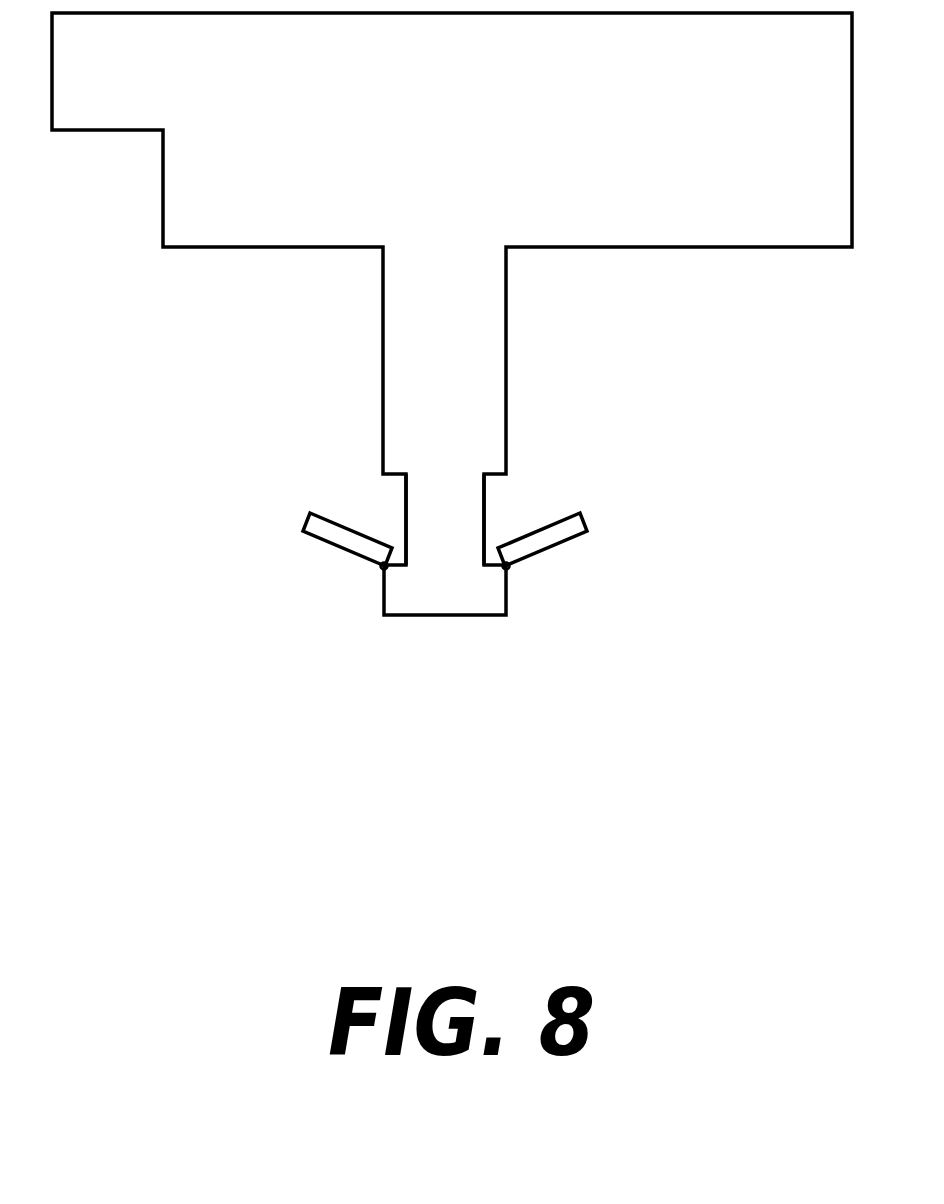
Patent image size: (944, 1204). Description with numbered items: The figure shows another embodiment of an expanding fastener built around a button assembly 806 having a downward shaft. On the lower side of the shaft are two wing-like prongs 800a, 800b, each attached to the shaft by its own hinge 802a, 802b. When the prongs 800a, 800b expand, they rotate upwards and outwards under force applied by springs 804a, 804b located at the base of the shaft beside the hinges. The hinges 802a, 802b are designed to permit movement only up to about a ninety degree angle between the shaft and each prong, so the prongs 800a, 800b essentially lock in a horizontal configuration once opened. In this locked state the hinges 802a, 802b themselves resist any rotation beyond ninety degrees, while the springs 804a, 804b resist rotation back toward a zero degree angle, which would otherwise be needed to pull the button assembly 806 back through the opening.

The button assembly 806 is at (498, 218).
The prong 800a is at (297, 560).
The prong 800b is at (590, 565).
The hinge 802a is at (365, 585).
The hinge 802b is at (525, 590).
The spring 804a is at (394, 585).
The spring 804b is at (495, 587).